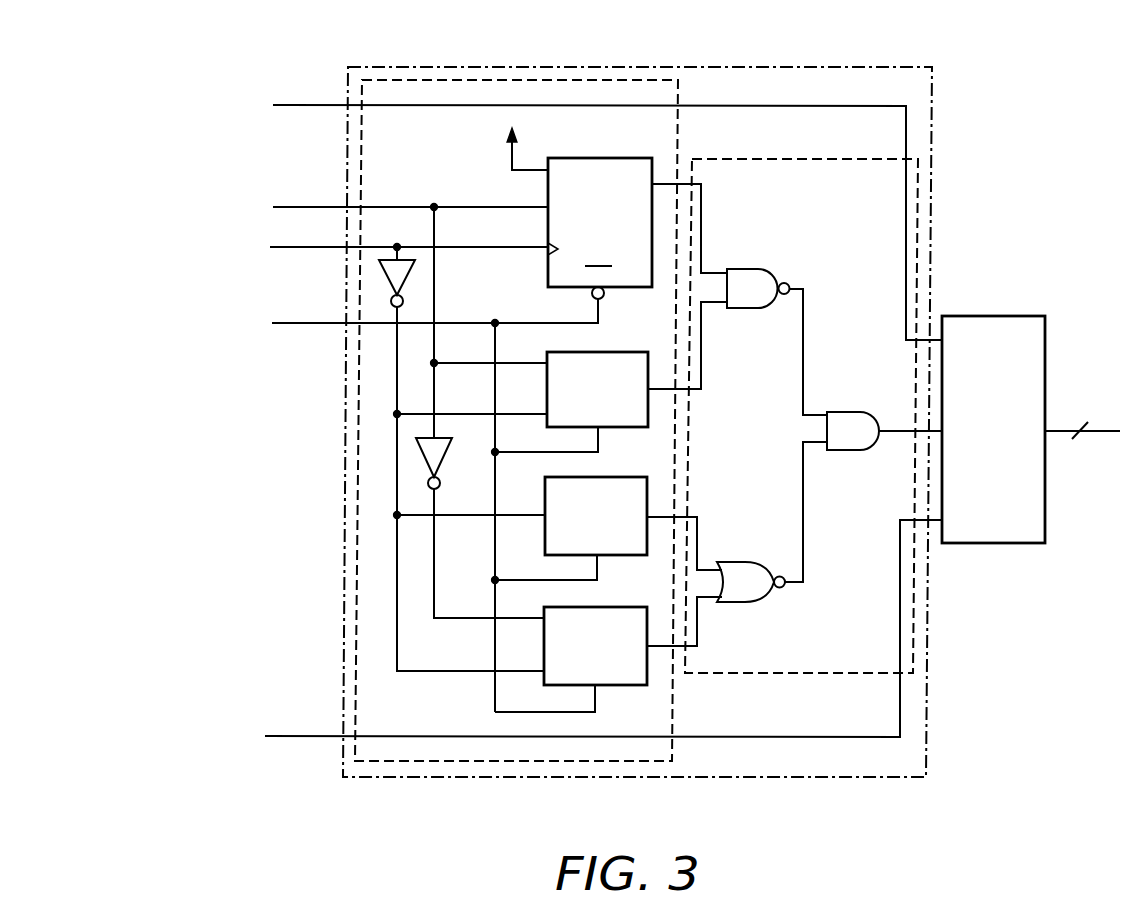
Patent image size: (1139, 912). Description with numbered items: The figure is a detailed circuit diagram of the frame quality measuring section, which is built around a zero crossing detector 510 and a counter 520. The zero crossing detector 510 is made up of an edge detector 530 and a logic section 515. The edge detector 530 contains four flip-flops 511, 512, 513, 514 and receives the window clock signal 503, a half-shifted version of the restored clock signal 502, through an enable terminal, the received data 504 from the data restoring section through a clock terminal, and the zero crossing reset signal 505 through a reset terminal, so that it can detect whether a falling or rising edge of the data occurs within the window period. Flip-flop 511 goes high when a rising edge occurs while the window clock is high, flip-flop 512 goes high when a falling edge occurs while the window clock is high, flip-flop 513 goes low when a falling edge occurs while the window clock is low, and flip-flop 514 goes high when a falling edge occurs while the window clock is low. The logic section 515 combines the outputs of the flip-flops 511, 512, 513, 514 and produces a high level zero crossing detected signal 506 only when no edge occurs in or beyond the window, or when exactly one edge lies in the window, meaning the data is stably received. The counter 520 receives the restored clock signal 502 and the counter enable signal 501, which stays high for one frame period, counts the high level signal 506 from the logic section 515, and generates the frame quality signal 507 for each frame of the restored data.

The zero crossing detector 510 is at (640, 67).
The edge detector 530 is at (678, 131).
The logic section 515 is at (800, 675).
The flip-flop 511 is at (598, 158).
The flip-flop 512 is at (636, 352).
The flip-flop 513 is at (636, 477).
The flip-flop 514 is at (634, 607).
The zero crossing detected signal 506 is at (900, 428).
The counter 520 is at (992, 316).
The frame quality signal 507 is at (1097, 445).
The counter enable signal 501 is at (526, 645).
The restored clock signal 502 is at (508, 216).
The window clock signal 503 is at (317, 396).
The received data 504 is at (281, 452).
The zero crossing reset signal 505 is at (330, 498).